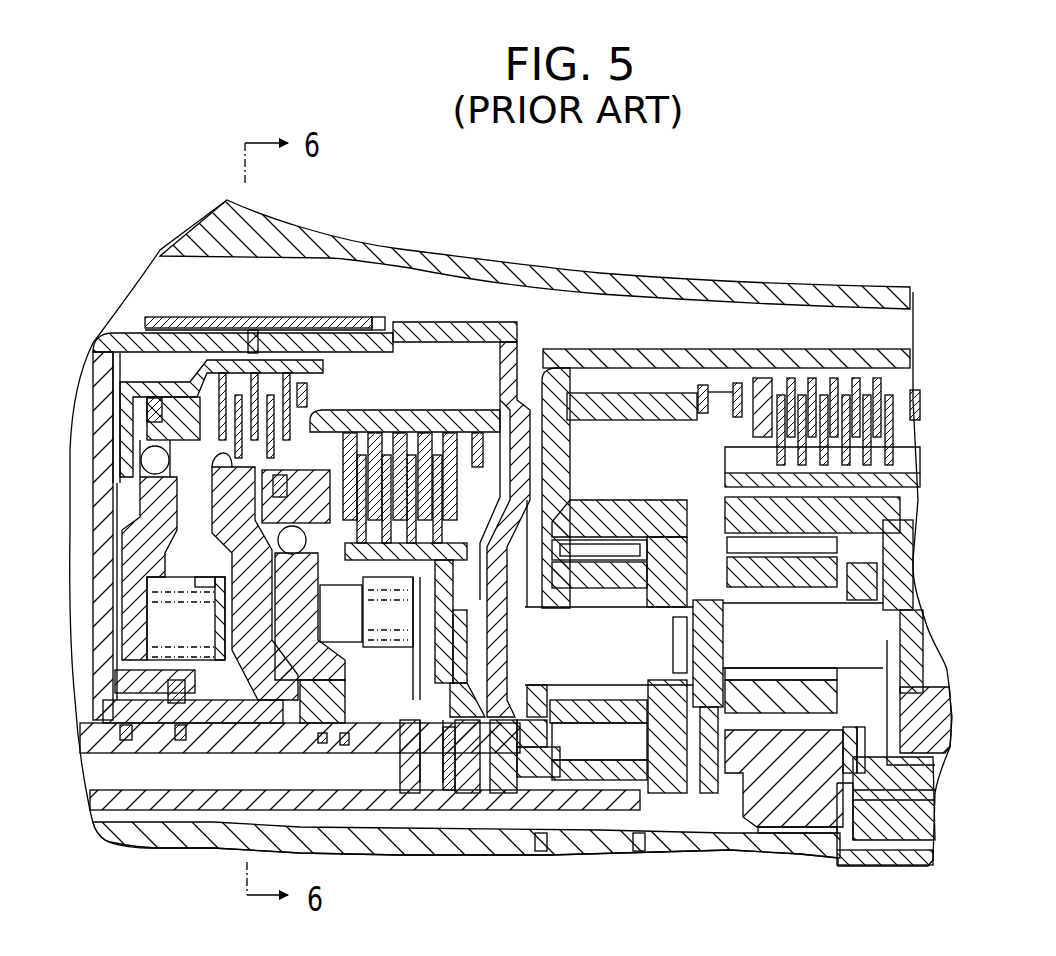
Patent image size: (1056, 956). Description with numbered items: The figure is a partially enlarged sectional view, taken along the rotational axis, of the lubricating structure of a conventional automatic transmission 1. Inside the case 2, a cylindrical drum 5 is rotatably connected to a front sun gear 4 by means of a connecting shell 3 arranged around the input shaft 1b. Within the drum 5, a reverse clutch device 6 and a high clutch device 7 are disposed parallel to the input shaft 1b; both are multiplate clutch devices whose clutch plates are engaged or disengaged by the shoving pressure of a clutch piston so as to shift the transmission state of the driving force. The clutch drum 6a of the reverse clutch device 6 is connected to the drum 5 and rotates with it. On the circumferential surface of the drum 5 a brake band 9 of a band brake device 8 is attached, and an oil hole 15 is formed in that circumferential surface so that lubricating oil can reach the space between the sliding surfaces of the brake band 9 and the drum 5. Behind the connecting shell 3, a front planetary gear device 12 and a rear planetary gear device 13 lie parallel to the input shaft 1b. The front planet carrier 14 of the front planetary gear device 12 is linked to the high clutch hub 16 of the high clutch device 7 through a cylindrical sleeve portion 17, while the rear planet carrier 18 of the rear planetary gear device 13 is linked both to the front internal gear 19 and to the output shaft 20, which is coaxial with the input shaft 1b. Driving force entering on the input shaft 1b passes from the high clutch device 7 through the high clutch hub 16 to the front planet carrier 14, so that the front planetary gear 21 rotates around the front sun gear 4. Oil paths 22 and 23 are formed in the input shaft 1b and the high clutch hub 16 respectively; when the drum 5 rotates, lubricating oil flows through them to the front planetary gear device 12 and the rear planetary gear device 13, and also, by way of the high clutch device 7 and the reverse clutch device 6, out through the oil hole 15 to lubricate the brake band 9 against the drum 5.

The automatic transmission 1 is at (546, 336).
The input shaft 1b is at (218, 837).
The case 2 is at (546, 268).
The connecting shell 3 is at (500, 320).
The front sun gear 4 is at (610, 688).
The drum 5 is at (198, 320).
The reverse clutch device 6 is at (332, 387).
The clutch drum 6a is at (280, 362).
The high clutch device 7 is at (404, 405).
The band brake device 8 is at (380, 300).
The brake band 9 is at (330, 317).
The front planetary gear device 12 is at (701, 486).
The rear planetary gear device 13 is at (920, 506).
The front planet carrier 14 is at (570, 468).
The oil hole 15 is at (250, 330).
The high clutch hub 16 is at (450, 433).
The cylindrical sleeve portion 17 is at (655, 395).
The rear planet carrier 18 is at (867, 578).
The front internal gear 19 is at (650, 518).
The output shaft 20 is at (907, 832).
The front planetary gear 21 is at (518, 782).
The oil path 22 is at (157, 752).
The oil path 23 is at (324, 720).